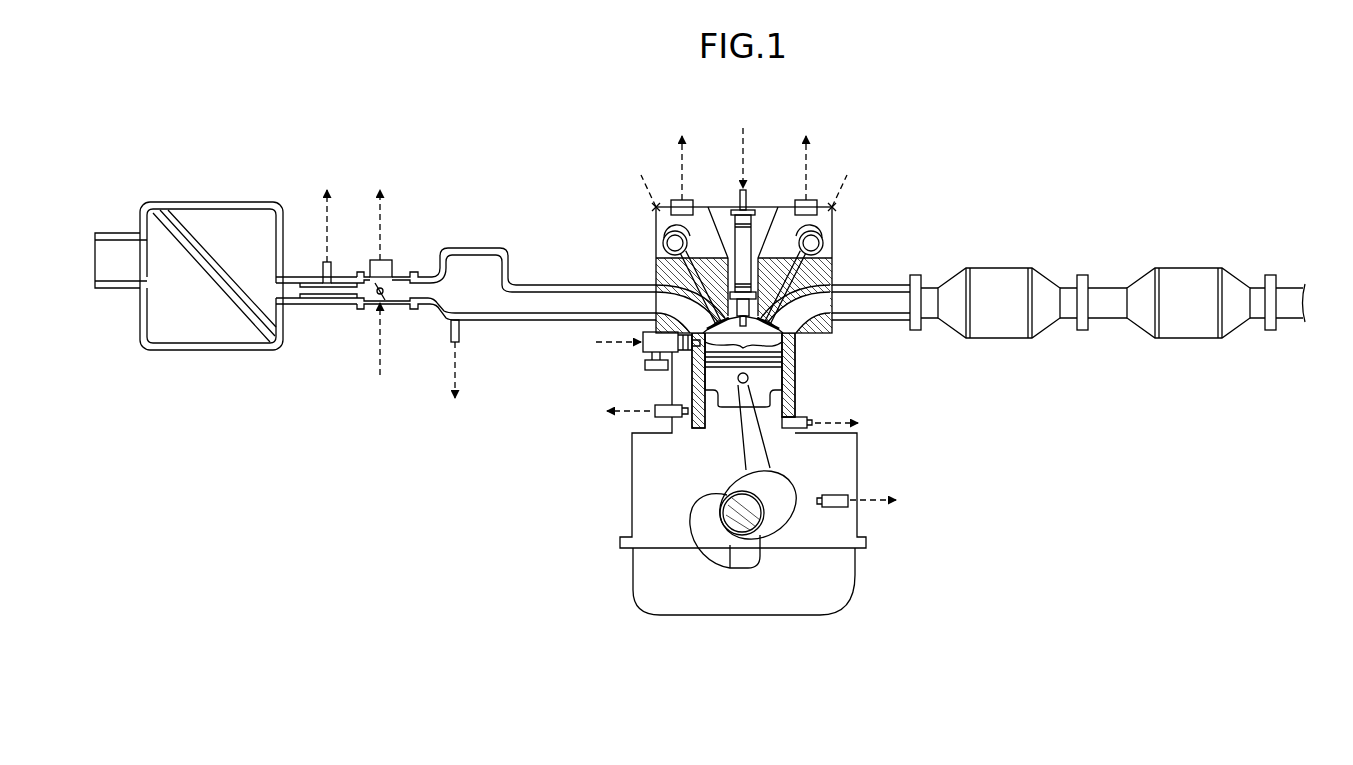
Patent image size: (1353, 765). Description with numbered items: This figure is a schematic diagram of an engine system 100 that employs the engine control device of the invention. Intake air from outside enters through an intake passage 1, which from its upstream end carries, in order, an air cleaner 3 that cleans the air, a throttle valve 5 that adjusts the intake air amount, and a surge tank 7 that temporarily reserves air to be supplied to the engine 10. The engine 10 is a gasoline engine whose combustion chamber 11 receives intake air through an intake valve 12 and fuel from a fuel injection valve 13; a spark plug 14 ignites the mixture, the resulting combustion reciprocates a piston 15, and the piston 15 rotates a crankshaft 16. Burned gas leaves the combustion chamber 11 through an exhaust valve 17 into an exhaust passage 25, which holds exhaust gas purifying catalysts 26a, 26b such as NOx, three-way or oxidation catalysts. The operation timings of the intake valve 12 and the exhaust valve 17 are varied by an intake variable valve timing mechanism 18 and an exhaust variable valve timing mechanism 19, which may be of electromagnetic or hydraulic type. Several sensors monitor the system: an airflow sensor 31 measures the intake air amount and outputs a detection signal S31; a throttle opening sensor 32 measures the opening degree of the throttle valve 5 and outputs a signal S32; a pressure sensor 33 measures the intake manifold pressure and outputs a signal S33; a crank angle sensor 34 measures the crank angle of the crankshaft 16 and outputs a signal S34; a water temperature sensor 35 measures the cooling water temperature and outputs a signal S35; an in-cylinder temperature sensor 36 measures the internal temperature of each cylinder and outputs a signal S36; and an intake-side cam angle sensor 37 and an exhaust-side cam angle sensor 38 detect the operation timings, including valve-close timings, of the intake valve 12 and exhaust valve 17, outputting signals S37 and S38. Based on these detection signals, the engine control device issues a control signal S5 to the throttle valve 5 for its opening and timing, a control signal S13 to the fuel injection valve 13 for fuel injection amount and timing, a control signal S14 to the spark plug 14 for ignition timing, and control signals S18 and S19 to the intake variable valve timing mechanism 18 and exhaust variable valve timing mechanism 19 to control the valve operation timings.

The engine system 100 is at (1000, 206).
The intake passage 1 is at (328, 308).
The air cleaner 3 is at (172, 205).
The throttle valve 5 is at (388, 302).
The surge tank 7 is at (467, 248).
The engine 10 is at (842, 618).
The combustion chamber 11 is at (794, 345).
The intake valve 12 is at (672, 298).
The fuel injection valve 13 is at (648, 356).
The spark plug 14 is at (752, 240).
The piston 15 is at (787, 378).
The crankshaft 16 is at (733, 530).
The exhaust valve 17 is at (800, 320).
The intake variable valve timing mechanism 18 is at (665, 246).
The exhaust variable valve timing mechanism 19 is at (822, 246).
The exhaust passage 25 is at (880, 321).
The exhaust gas purifying catalyst 26a is at (1000, 268).
The exhaust gas purifying catalyst 26b is at (1189, 268).
The airflow sensor 31 is at (322, 270).
The throttle opening sensor 32 is at (391, 262).
The pressure sensor 33 is at (460, 336).
The crank angle sensor 34 is at (840, 503).
The water temperature sensor 35 is at (663, 421).
The in-cylinder temperature sensor 36 is at (802, 430).
The intake-side cam angle sensor 37 is at (690, 200).
The exhaust-side cam angle sensor 38 is at (798, 200).
The detection signal of airflow sensor S31 is at (327, 210).
The detection signal of throttle opening sensor S32 is at (380, 209).
The control signal to throttle valve S5 is at (380, 352).
The detection signal of pressure sensor S33 is at (455, 382).
The detection signal of intake-side cam angle sensor S37 is at (680, 153).
The control signal to spark plug S14 is at (745, 148).
The detection signal of exhaust-side cam angle sensor S38 is at (805, 153).
The control signal to intake variable valve timing mechanism S18 is at (635, 177).
The control signal to exhaust variable valve timing mechanism S19 is at (850, 177).
The control signal to fuel injection valve S13 is at (594, 342).
The detection signal of water temperature sensor S35 is at (603, 410).
The detection signal of in-cylinder temperature sensor S36 is at (860, 423).
The detection signal of crank angle sensor S34 is at (897, 500).